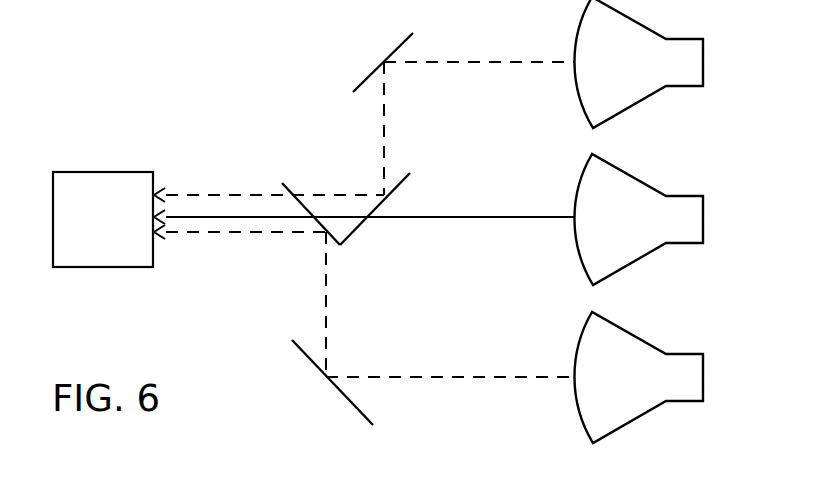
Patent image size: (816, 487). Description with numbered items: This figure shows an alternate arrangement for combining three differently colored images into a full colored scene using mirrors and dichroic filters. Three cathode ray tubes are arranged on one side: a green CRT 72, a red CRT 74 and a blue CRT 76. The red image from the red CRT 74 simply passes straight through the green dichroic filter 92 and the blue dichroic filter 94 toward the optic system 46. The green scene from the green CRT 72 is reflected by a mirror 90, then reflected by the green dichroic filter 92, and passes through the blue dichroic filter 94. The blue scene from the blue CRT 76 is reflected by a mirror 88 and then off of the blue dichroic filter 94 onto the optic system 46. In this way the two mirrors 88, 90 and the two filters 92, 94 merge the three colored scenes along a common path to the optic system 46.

The optic system 46 is at (108, 236).
The green CRT 72 is at (670, 87).
The red CRT 74 is at (669, 244).
The blue CRT 76 is at (669, 402).
The mirror 88 is at (344, 398).
The mirror 90 is at (383, 62).
The green dichroic filter 92 is at (363, 228).
The blue dichroic filter 94 is at (284, 184).